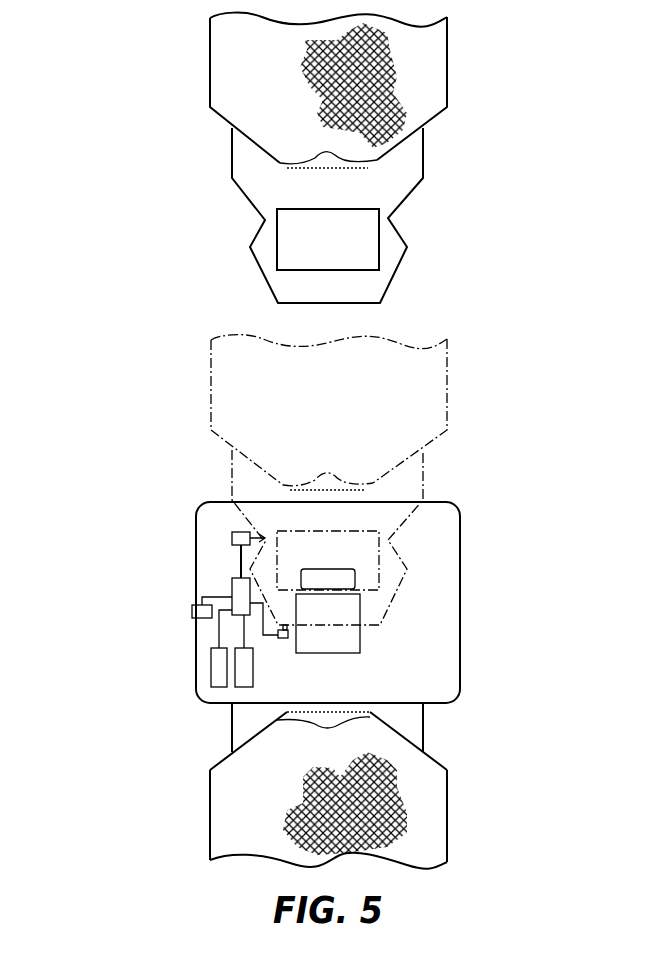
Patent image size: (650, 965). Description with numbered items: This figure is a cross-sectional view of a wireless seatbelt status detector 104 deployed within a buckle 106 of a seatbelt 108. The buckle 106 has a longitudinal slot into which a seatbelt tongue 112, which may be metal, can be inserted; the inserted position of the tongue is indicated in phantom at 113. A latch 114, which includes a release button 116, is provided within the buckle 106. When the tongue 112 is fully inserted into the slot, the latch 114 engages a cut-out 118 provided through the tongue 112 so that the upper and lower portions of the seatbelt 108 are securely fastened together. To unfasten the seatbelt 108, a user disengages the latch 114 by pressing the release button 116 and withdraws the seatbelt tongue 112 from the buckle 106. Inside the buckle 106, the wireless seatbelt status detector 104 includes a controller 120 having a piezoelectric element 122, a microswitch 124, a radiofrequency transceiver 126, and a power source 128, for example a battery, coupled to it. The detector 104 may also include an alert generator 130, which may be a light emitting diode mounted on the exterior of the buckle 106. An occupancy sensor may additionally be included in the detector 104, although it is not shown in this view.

The wireless seatbelt status detector 104 is at (145, 598).
The buckle 106 is at (460, 590).
The seatbelt 108 is at (209, 40).
The seatbelt tongue 112 is at (232, 178).
The seatbelt tongue in phantom 113 is at (211, 360).
The latch 114 is at (337, 570).
The release button 116 is at (360, 637).
The cut-out 118 is at (277, 240).
The controller 120 is at (232, 588).
The piezoelectric element 122 is at (232, 538).
The microswitch 124 is at (282, 638).
The radiofrequency transceiver 126 is at (211, 660).
The power source 128 is at (242, 687).
The alert generator 130 is at (192, 612).